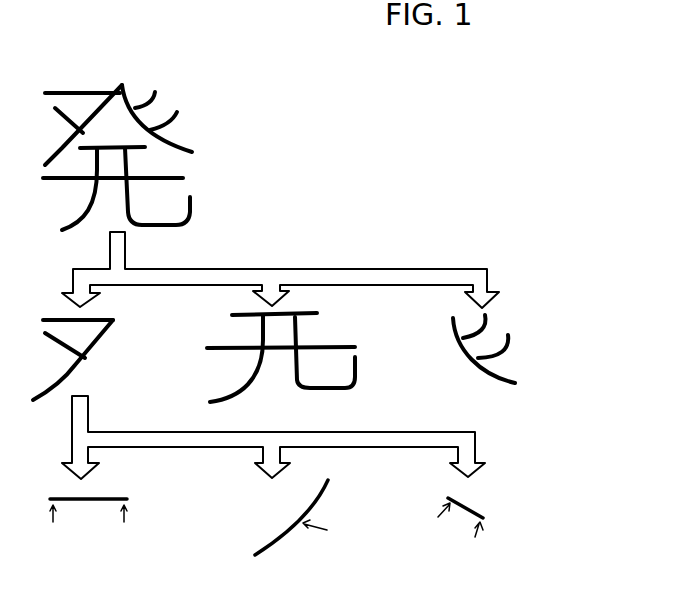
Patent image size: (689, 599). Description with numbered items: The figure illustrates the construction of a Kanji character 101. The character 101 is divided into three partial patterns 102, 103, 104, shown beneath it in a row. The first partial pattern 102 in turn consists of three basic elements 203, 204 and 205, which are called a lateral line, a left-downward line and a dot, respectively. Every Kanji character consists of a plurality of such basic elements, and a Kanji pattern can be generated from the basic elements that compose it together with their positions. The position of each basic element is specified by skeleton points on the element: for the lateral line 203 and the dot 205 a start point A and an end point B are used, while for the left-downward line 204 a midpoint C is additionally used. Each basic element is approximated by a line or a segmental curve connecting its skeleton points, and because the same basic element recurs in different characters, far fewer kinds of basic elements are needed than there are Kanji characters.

The character 101 is at (133, 82).
The first partial pattern 102 is at (117, 323).
The partial pattern 103 is at (320, 327).
The partial pattern 104 is at (495, 327).
The lateral line 203 is at (132, 494).
The left-downward line 204 is at (332, 485).
The dot 205 is at (477, 503).